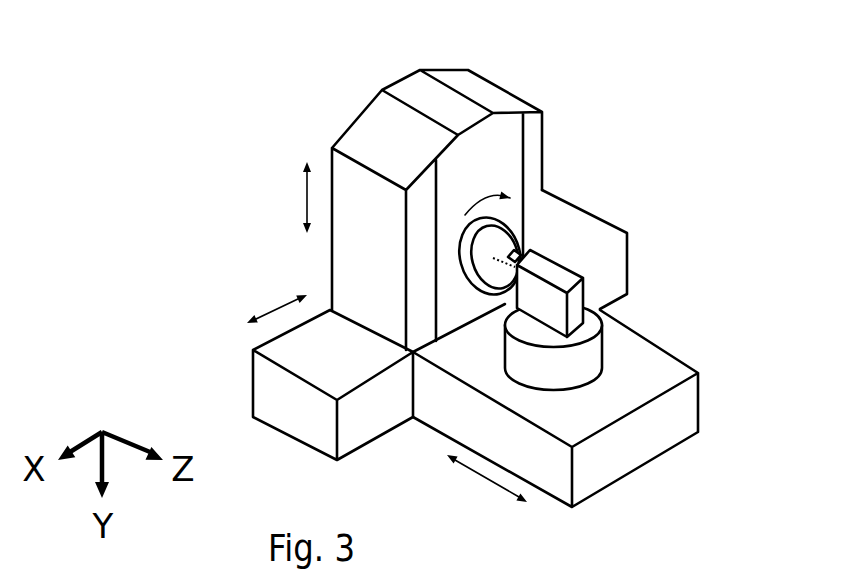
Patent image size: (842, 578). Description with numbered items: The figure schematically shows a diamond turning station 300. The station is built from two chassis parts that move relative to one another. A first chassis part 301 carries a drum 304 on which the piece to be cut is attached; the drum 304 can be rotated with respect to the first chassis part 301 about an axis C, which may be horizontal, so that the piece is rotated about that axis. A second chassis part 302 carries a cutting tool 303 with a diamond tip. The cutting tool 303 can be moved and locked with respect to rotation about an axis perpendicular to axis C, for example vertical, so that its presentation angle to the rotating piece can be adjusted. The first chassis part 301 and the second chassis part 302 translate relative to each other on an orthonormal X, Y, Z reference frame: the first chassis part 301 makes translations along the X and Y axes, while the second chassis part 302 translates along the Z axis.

The diamond turning station 300 is at (512, 260).
The first chassis part 301 is at (577, 216).
The second chassis part 302 is at (680, 410).
The cutting tool 303 is at (616, 350).
The drum 304 is at (460, 265).